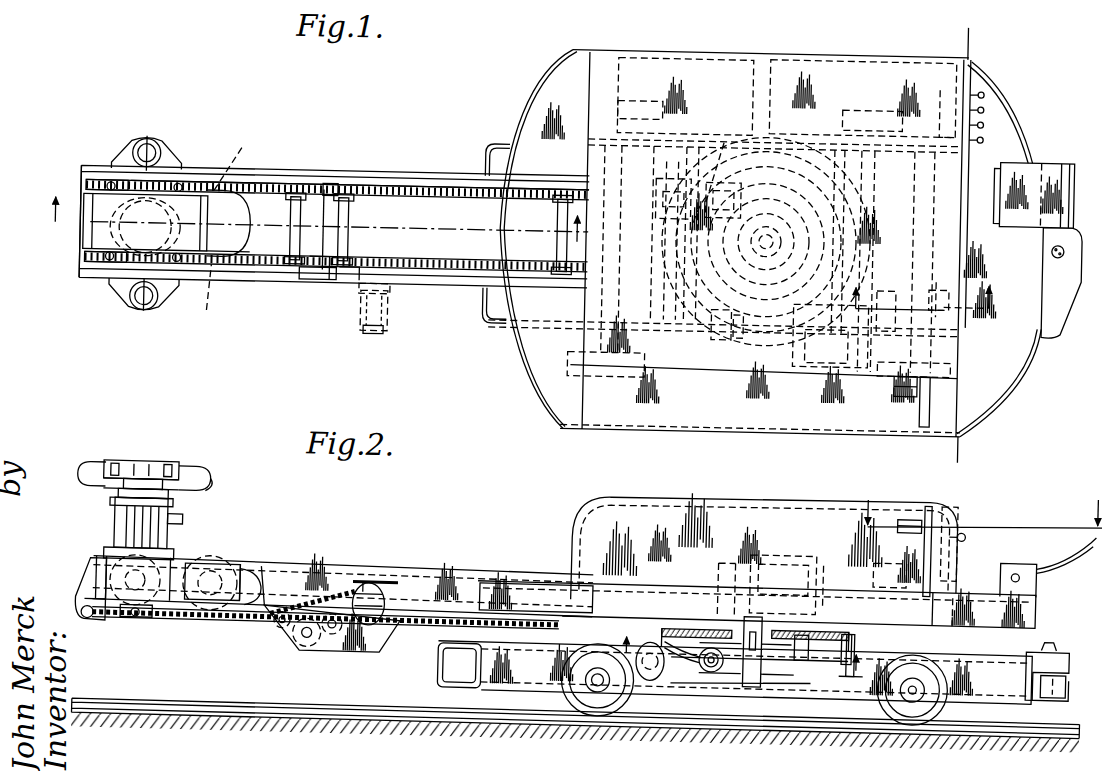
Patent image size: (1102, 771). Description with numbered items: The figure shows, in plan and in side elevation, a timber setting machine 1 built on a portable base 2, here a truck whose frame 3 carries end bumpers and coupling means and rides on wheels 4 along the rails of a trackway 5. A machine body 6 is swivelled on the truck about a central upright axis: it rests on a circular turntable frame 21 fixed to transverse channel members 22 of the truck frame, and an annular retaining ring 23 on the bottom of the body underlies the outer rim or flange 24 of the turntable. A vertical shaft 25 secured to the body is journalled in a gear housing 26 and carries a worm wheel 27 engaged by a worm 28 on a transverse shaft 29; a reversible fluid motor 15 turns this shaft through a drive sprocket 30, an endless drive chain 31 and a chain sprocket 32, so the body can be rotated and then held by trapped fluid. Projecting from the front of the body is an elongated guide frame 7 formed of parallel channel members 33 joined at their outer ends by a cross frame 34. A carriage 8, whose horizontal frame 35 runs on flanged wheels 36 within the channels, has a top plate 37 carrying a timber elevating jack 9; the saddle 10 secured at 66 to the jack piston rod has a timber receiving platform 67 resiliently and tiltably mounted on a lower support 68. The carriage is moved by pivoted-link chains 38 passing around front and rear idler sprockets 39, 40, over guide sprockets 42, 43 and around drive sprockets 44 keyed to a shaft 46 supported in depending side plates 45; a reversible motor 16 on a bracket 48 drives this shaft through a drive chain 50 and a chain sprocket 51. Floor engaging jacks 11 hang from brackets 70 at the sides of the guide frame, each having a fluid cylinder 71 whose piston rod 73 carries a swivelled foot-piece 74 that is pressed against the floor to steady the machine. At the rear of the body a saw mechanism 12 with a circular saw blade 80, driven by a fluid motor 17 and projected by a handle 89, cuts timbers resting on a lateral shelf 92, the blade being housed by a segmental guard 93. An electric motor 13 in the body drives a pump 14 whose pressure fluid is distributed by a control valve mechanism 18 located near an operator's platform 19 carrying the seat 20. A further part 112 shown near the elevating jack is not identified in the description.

In FIG. 1, the timber setting machine 1 is at (687, 52).
In FIG. 2, the timber setting machine 1 is at (505, 570).
In FIG. 1, the portable base 2 is at (490, 322).
In FIG. 2, the portable base 2 is at (480, 688).
In FIG. 1, the frame 3 is at (967, 25).
In FIG. 2, the frame 3 is at (1010, 650).
In FIG. 1, the wheels 4 is at (973, 360).
In FIG. 2, the wheels 4 is at (590, 690).
In FIG. 2, the trackway 5 is at (372, 712).
In FIG. 1, the machine body 6 is at (820, 65).
In FIG. 2, the machine body 6 is at (685, 505).
In FIG. 1, the guide frame 7 is at (407, 177).
In FIG. 2, the guide frame 7 is at (330, 570).
In FIG. 1, the carriage 8 is at (240, 208).
In FIG. 2, the carriage 8 is at (248, 592).
In FIG. 1, the timber elevating jack 9 is at (133, 260).
In FIG. 2, the timber elevating jack 9 is at (110, 526).
In FIG. 1, the timber receiving saddle 10 is at (182, 206).
In FIG. 2, the timber receiving saddle 10 is at (155, 474).
In FIG. 1, the floor engaging jacks 11 is at (157, 160).
In FIG. 2, the floor engaging jacks 11 is at (150, 553).
In FIG. 1, the saw mechanism 12 is at (940, 292).
In FIG. 2, the saw mechanism 12 is at (950, 556).
In FIG. 1, the motor 13 is at (810, 349).
In FIG. 2, the motor 13 is at (790, 560).
In FIG. 1, the pump 14 is at (727, 342).
In FIG. 2, the pump 14 is at (713, 560).
In FIG. 1, the reversible motor 15 is at (673, 236).
In FIG. 2, the reversible motor 15 is at (652, 680).
In FIG. 1, the reversible motor 16 is at (383, 339).
In FIG. 2, the reversible motor 16 is at (382, 605).
In FIG. 1, the motor 17 is at (877, 324).
In FIG. 2, the motor 17 is at (893, 567).
In FIG. 1, the control valve mechanism 18 is at (937, 83).
In FIG. 2, the control valve mechanism 18 is at (955, 520).
In FIG. 1, the operator's platform 19 is at (997, 138).
In FIG. 2, the operator's platform 19 is at (950, 590).
In FIG. 1, the seat 20 is at (1057, 160).
In FIG. 2, the seat 20 is at (1012, 565).
In FIG. 2, the circular turntable frame 21 is at (700, 632).
In FIG. 2, the transverse channel members 22 is at (672, 628).
In FIG. 2, the annular retaining ring 23 is at (880, 630).
In FIG. 2, the annular outer rim 24 is at (838, 627).
In FIG. 2, the vertical shaft 25 is at (750, 684).
In FIG. 2, the gear housing 26 is at (805, 655).
In FIG. 1, the worm wheel 27 is at (835, 215).
In FIG. 2, the worm wheel 27 is at (780, 660).
In FIG. 1, the worm 28 is at (733, 227).
In FIG. 2, the worm 28 is at (712, 665).
In FIG. 1, the transverse shaft 29 is at (755, 200).
In FIG. 2, the transverse shaft 29 is at (705, 665).
In FIG. 1, the drive sprocket 30 is at (673, 184).
In FIG. 1, the endless drive chain 31 is at (724, 158).
In FIG. 2, the endless drive chain 31 is at (680, 660).
In FIG. 1, the chain sprocket 32 is at (738, 189).
In FIG. 1, the channel members 33 is at (427, 183).
In FIG. 2, the channel members 33 is at (470, 572).
In FIG. 1, the cross frame 34 is at (83, 263).
In FIG. 2, the cross frame 34 is at (84, 580).
In FIG. 2, the horizontal frame 35 is at (264, 592).
In FIG. 1, the flanged wheels 36 is at (120, 175).
In FIG. 2, the flanged wheels 36 is at (218, 578).
In FIG. 1, the top plate 37 is at (238, 274).
In FIG. 2, the top plate 37 is at (255, 580).
In FIG. 1, the pivoted-link chains 38 is at (480, 262).
In FIG. 2, the pivoted-link chains 38 is at (440, 632).
In FIG. 1, the front idler sprockets 39 is at (87, 190).
In FIG. 2, the front idler sprockets 39 is at (90, 634).
In FIG. 1, the rear idler sprockets 40 is at (555, 265).
In FIG. 2, the rear idler sprockets 40 is at (570, 608).
In FIG. 1, the guide sprocket 42 is at (292, 198).
In FIG. 2, the guide sprocket 42 is at (270, 632).
In FIG. 1, the guide sprocket 43 is at (350, 202).
In FIG. 2, the guide sprocket 43 is at (370, 645).
In FIG. 1, the drive sprockets 44 is at (337, 196).
In FIG. 2, the side plates 45 is at (340, 657).
In FIG. 1, the drive sprocket shaft 46 is at (317, 213).
In FIG. 2, the drive sprocket shaft 46 is at (302, 648).
In FIG. 1, the bracket 48 is at (372, 328).
In FIG. 2, the bracket 48 is at (372, 588).
In FIG. 1, the endless drive chain 50 is at (352, 292).
In FIG. 2, the endless drive chain 50 is at (345, 585).
In FIG. 1, the chain sprocket 51 is at (320, 276).
In FIG. 2, the chain sprocket 51 is at (285, 643).
In FIG. 2, the saddle securing point 66 is at (135, 474).
In FIG. 1, the timber receiving platform 67 is at (98, 244).
In FIG. 2, the timber receiving platform 67 is at (118, 476).
In FIG. 2, the lower support 68 is at (204, 490).
In FIG. 1, the brackets 70 is at (127, 167).
In FIG. 2, the brackets 70 is at (173, 577).
In FIG. 1, the fluid cylinder 71 is at (157, 160).
In FIG. 2, the fluid cylinder 71 is at (128, 538).
In FIG. 2, the piston rod 73 is at (152, 632).
In FIG. 2, the foot-piece 74 is at (140, 632).
In FIG. 2, the circular saw blade 80 is at (960, 535).
In FIG. 1, the handle 89 is at (907, 386).
In FIG. 2, the handle 89 is at (905, 512).
In FIG. 1, the lateral shelf 92 is at (827, 416).
In FIG. 2, the lateral shelf 92 is at (825, 580).
In FIG. 1, the segmental guard 93 is at (933, 411).
In FIG. 2, the segmental guard 93 is at (930, 505).
In FIG. 2, the pipe 112 is at (178, 529).